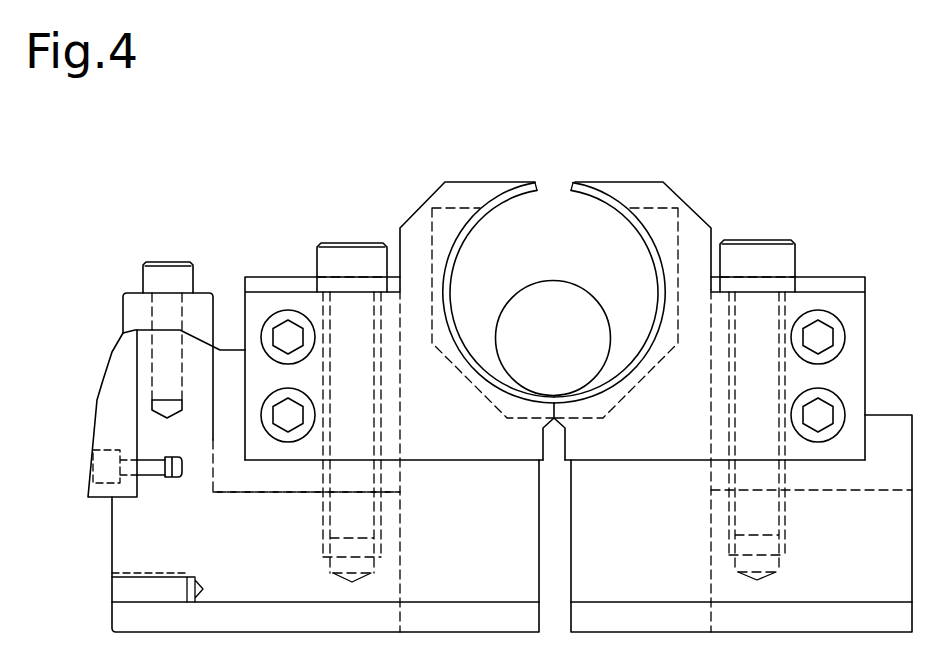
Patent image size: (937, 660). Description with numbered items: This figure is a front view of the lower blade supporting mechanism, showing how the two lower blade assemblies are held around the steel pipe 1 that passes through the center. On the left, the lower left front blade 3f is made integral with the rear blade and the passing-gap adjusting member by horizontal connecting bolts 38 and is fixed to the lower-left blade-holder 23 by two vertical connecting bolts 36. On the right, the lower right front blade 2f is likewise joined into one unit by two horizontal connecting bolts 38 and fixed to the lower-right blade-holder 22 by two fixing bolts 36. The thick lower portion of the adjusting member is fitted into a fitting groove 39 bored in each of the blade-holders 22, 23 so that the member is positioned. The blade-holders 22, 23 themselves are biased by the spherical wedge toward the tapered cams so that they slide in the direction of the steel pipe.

The pipe 1 is at (578, 286).
The lower right front blade 2f is at (658, 147).
The lower left front blade 3f is at (498, 182).
The lower-right blade-holder 22 is at (675, 571).
The lower-left blade-holder 23 is at (478, 571).
The vertical connecting bolt 36 is at (370, 243).
The horizontal connecting bolt 38 is at (277, 405).
The fitting groove 39 is at (228, 493).